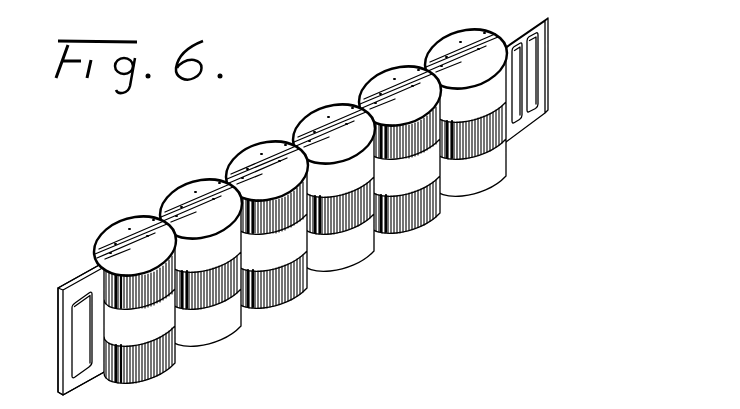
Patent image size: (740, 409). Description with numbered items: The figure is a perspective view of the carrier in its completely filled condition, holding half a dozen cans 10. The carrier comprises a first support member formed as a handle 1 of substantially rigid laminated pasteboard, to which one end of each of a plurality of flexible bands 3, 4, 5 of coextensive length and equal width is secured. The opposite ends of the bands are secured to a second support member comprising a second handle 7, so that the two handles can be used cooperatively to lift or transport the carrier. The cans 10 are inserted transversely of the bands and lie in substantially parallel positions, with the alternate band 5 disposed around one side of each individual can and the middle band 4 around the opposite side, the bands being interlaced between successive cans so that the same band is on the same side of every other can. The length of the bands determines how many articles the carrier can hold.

The handle 1 is at (61, 297).
The flexible band 3 is at (147, 370).
The middle band 4 is at (217, 285).
The alternate band 5 is at (148, 283).
The second handle 7 is at (543, 116).
The can 10 is at (133, 232).